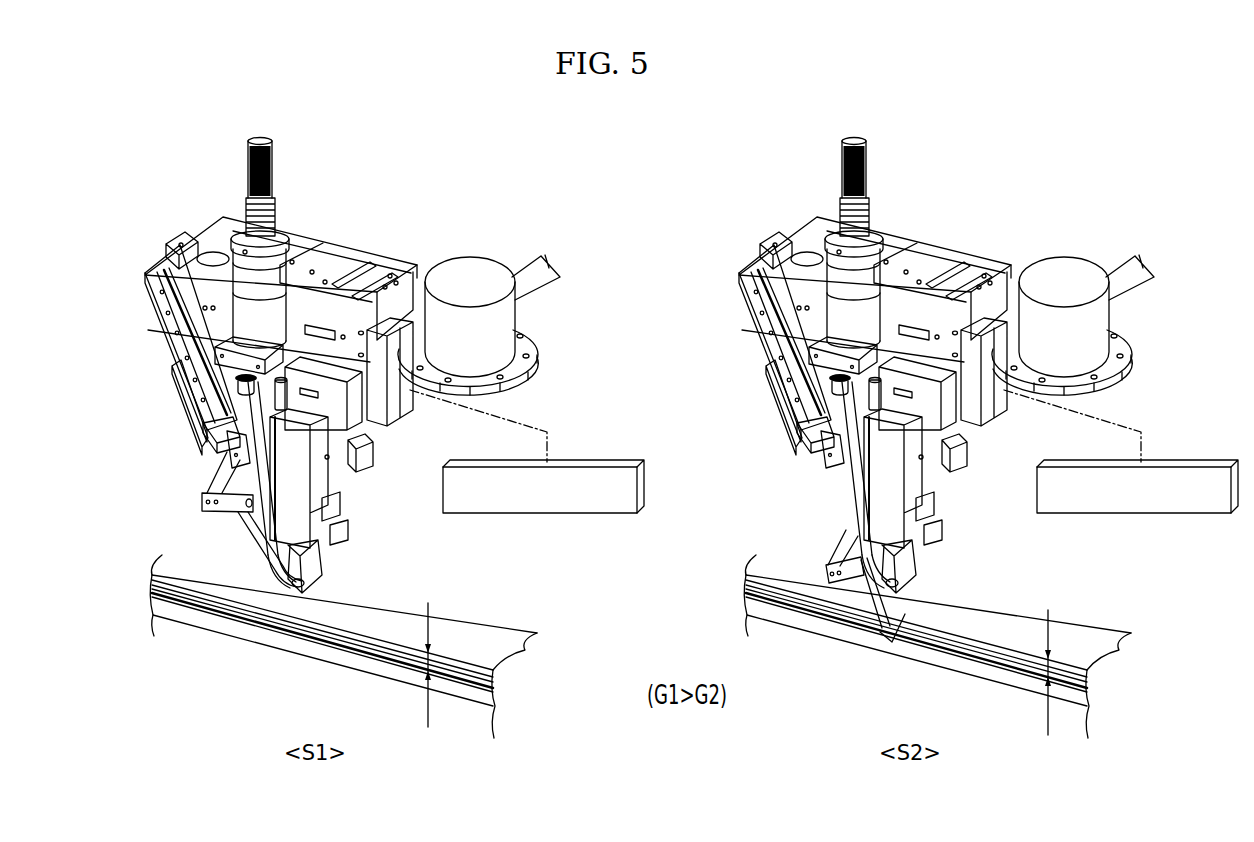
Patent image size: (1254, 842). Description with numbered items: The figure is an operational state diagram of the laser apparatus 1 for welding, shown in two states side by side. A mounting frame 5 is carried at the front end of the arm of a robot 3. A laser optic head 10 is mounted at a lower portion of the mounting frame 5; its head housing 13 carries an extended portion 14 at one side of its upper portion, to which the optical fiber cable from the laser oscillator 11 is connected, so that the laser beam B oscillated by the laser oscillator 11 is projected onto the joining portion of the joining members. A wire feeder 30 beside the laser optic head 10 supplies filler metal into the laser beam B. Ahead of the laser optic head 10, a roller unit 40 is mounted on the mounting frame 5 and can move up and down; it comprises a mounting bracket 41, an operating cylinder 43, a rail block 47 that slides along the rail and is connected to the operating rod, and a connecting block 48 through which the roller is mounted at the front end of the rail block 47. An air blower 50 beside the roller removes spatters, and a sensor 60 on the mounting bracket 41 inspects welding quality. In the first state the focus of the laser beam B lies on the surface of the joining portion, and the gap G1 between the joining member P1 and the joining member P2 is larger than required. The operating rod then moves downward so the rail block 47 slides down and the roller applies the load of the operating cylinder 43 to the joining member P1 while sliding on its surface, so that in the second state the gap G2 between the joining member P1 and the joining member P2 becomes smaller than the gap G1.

The laser apparatus for welding 1 is at (337, 116).
The robot 3 is at (530, 273).
The mounting frame 5 is at (386, 263).
The laser optic head 10 is at (384, 500).
The laser oscillator 11 is at (619, 460).
The head housing 13 is at (343, 480).
The extended portion 14 is at (358, 460).
The wire feeder 30 is at (287, 265).
The roller unit 40 is at (141, 303).
The mounting bracket 41 is at (240, 225).
The operating cylinder 43 is at (180, 243).
The rail block 47 is at (162, 266).
The connecting block 48 is at (228, 458).
The air blower 50 is at (226, 524).
The sensor 60 is at (215, 258).
The laser beam B is at (327, 565).
The joining member P1 is at (483, 633).
The joining member P2 is at (393, 665).
The gap G1 is at (433, 668).
The gap G2 is at (1053, 674).